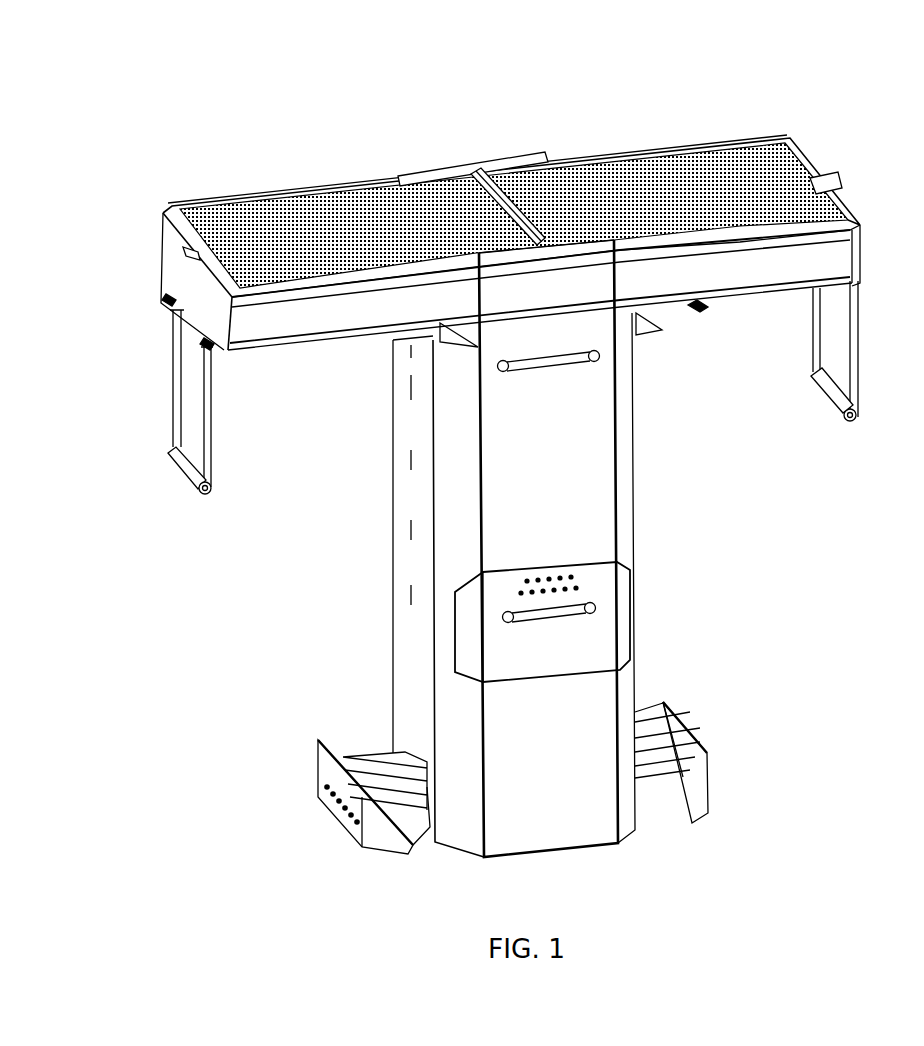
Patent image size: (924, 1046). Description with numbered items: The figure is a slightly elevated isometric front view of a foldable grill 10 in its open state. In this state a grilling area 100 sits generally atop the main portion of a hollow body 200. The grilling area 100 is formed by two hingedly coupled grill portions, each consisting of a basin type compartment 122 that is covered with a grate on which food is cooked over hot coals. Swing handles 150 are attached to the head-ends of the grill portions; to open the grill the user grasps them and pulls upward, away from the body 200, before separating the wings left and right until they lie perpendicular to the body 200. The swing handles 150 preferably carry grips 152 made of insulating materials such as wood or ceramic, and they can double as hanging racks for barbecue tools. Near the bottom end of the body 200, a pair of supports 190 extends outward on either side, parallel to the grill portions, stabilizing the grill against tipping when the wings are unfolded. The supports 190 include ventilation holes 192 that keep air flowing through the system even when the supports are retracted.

The foldable grill 10 is at (293, 622).
The grilling area 100 is at (792, 118).
The basin type compartment 122 is at (330, 312).
The swing handles 150 is at (848, 343).
The grips 152 is at (818, 399).
The supports 190 is at (385, 837).
The ventilation holes 192 is at (330, 807).
The body 200 is at (578, 488).